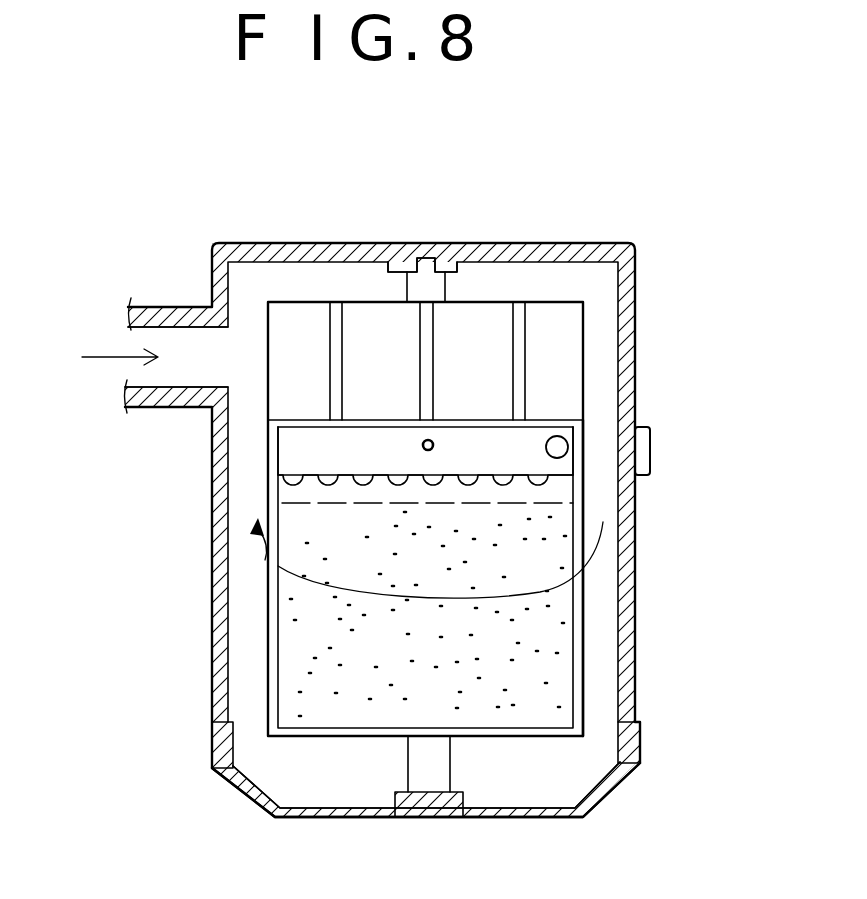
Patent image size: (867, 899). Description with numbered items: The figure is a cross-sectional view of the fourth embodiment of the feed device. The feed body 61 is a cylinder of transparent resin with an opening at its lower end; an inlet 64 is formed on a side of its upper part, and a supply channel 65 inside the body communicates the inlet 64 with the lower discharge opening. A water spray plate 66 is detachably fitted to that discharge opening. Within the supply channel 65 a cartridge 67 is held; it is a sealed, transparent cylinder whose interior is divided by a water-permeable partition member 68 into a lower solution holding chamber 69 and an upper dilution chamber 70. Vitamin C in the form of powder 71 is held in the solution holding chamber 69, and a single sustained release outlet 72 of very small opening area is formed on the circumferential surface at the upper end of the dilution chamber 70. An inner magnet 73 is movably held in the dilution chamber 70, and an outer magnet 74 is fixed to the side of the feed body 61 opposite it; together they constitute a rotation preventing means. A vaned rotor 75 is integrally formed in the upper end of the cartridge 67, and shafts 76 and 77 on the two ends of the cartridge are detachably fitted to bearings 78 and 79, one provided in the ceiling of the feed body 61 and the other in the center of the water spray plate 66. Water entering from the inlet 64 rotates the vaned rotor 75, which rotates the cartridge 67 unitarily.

The feed body 61 is at (636, 578).
The inlet 64 is at (215, 352).
The supply channel 65 is at (248, 590).
The water spray plate 66 is at (600, 797).
The cartridge 67 is at (583, 498).
The water-permeable partition member 68 is at (285, 485).
The solution holding chamber 69 is at (553, 655).
The dilution chamber 70 is at (300, 452).
The powder 71 is at (538, 690).
The sustained release outlet 72 is at (435, 443).
The inner magnet 73 is at (560, 447).
The outer magnet 74 is at (640, 452).
The vaned rotor 75 is at (553, 345).
The shaft 76 is at (437, 292).
The shaft 77 is at (443, 768).
The bearing 78 is at (400, 268).
The bearing 79 is at (400, 813).